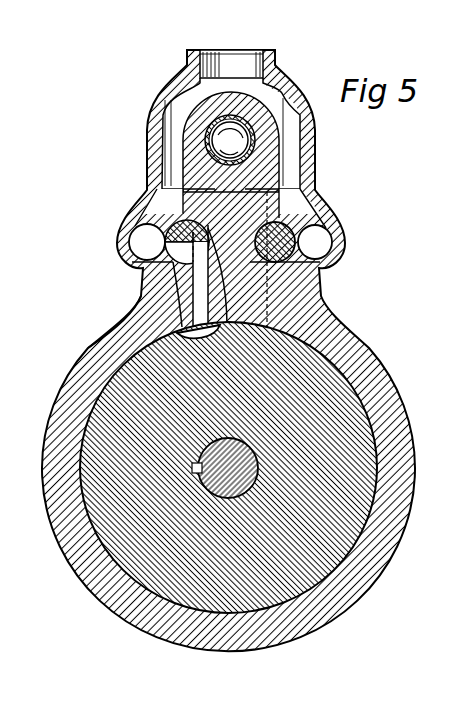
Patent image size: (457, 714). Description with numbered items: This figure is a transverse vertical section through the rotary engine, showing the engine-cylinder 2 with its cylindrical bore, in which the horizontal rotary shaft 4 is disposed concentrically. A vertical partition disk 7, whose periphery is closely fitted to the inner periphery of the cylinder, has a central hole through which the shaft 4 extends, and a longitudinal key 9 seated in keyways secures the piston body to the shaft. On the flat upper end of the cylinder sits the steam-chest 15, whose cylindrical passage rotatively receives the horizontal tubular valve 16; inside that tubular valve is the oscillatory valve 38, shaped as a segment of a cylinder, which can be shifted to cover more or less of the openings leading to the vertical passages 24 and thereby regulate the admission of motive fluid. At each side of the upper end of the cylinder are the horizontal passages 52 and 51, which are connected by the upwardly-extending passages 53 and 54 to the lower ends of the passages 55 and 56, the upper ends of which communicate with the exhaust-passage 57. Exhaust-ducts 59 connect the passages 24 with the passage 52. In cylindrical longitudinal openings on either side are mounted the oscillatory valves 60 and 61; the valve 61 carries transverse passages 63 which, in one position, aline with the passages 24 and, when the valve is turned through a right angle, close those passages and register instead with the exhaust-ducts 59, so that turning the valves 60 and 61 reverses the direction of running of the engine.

The engine-cylinder 2 is at (373, 353).
The rotary shaft 4 is at (242, 467).
The partition disk 7 is at (350, 502).
The longitudinal key 9 is at (192, 468).
The steam-chest 15 is at (150, 128).
The tubular valve 16 is at (230, 149).
The vertical passages 24 is at (142, 297).
The oscillatory valve 38 is at (230, 149).
The horizontal passage 51 is at (320, 242).
The horizontal passage 52 is at (140, 240).
The upwardly-extending passage 53 is at (158, 210).
The upwardly-extending passage 54 is at (318, 197).
The passage 55 is at (165, 100).
The passage 56 is at (283, 107).
The exhaust-passage 57 is at (242, 62).
The exhaust-duct 59 is at (162, 262).
The oscillatory valve 60 is at (300, 213).
The oscillatory valve 61 is at (158, 252).
The transverse passages 63 is at (140, 273).